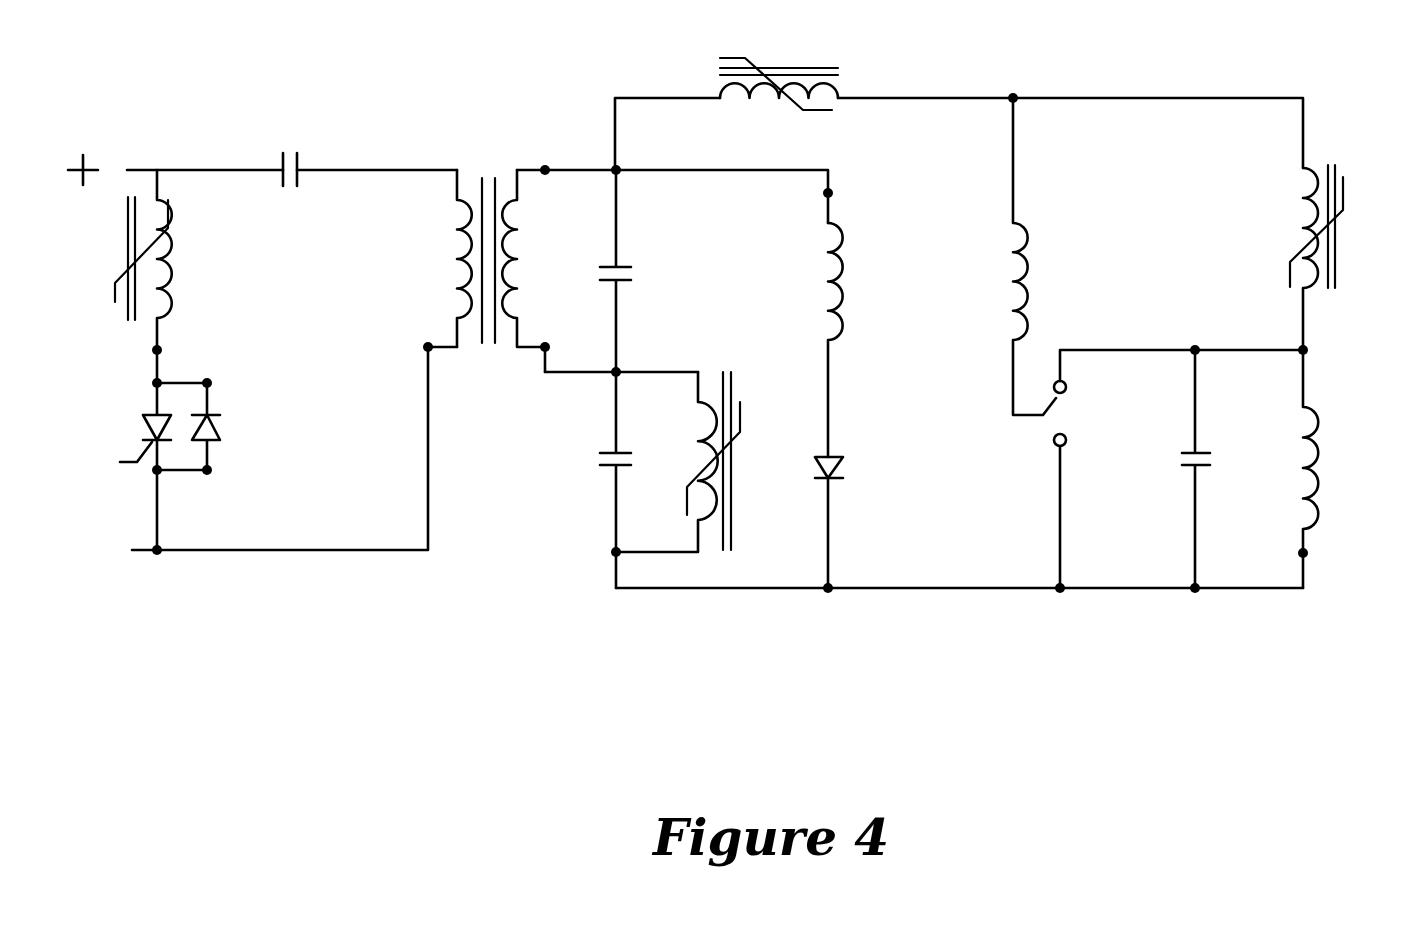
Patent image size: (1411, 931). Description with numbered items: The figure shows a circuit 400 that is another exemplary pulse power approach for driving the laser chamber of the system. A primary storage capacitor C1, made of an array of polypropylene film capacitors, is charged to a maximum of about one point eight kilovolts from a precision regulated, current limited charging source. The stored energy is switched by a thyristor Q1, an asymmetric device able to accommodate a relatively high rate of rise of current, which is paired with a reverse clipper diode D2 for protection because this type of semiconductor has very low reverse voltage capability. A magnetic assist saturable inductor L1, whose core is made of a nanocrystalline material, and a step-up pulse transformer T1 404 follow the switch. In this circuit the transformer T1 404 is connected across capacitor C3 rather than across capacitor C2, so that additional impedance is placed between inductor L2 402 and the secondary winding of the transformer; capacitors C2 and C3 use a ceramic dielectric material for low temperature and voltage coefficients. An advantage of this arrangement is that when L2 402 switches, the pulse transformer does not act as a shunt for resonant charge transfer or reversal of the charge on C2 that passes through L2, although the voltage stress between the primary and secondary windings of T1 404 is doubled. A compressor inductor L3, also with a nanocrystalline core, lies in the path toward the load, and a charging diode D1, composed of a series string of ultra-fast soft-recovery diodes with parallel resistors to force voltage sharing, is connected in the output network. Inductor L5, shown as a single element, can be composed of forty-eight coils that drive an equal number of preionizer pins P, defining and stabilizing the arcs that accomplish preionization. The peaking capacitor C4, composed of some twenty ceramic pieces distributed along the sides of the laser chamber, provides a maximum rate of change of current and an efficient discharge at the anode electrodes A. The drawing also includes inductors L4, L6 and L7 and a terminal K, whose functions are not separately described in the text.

The circuit 400 is at (232, 710).
The inductor L2 402 is at (756, 466).
The pulse transformer T1 404 is at (448, 262).
The primary storage capacitor C1 is at (298, 151).
The capacitor C2 is at (593, 480).
The capacitor C3 is at (633, 271).
The peaking capacitor C4 is at (1208, 469).
The magnetic assist saturable inductor L1 is at (157, 276).
The inductor L2 is at (699, 462).
The compressor L3 is at (814, 84).
The inductor L4 is at (855, 337).
The inductor L5 is at (1044, 256).
The inductor L6 is at (1331, 469).
The saturable inductor L7 is at (1337, 257).
The step-up transformer T1 is at (420, 287).
The thyristor Q1 is at (137, 420).
The charging diode D1 is at (850, 517).
The reverse clipper diode D2 is at (212, 426).
The cathode terminal K is at (1178, 374).
The preionizer pins P is at (1035, 444).
The anode electrodes A is at (1076, 517).